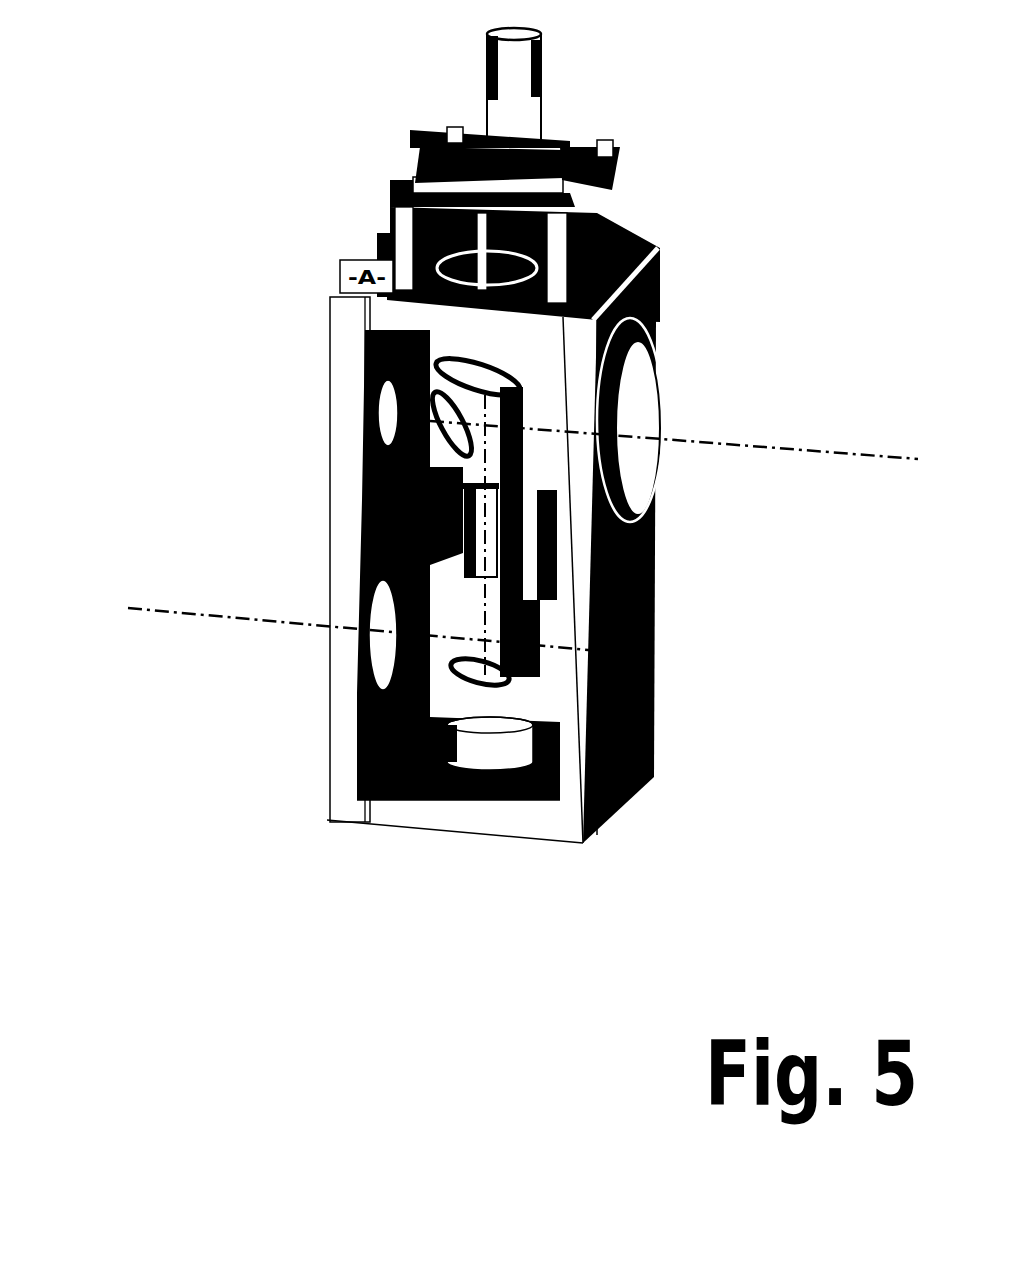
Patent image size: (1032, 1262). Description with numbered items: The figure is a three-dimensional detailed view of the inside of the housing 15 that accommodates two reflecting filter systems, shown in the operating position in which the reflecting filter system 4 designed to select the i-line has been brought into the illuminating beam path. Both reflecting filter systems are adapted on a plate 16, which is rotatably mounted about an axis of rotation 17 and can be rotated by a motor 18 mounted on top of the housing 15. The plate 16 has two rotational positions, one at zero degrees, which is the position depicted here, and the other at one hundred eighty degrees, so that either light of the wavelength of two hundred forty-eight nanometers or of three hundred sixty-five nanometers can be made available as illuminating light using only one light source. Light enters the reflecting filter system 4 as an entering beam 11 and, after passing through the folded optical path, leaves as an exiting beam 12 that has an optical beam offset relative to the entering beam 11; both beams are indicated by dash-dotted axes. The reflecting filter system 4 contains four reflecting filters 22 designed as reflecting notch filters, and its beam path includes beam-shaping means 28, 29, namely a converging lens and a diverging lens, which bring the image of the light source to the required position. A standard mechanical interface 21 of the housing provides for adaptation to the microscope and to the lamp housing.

The reflecting filter system 4 is at (321, 498).
The entering beam 11 is at (693, 438).
The exiting beam 12 is at (177, 612).
The housing 15 is at (653, 610).
The plate 16 is at (378, 785).
The axis of rotation 17 is at (493, 800).
The motor 18 is at (537, 254).
The mechanical interface 21 is at (652, 494).
The reflecting filters 22 is at (478, 360).
The beam-shaping means 28 is at (210, 559).
The beam-shaping means 29 is at (363, 492).